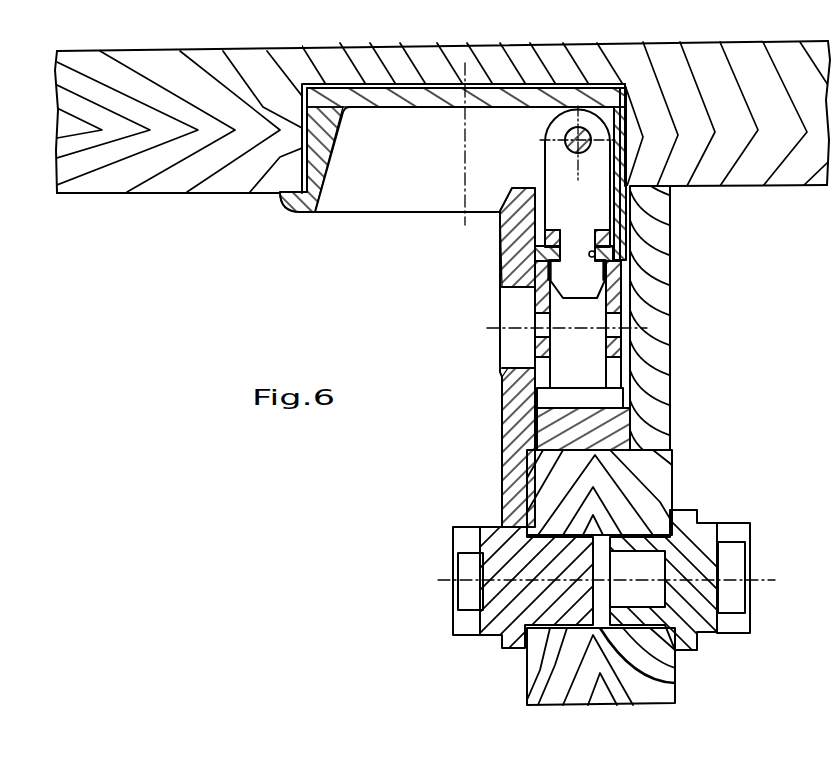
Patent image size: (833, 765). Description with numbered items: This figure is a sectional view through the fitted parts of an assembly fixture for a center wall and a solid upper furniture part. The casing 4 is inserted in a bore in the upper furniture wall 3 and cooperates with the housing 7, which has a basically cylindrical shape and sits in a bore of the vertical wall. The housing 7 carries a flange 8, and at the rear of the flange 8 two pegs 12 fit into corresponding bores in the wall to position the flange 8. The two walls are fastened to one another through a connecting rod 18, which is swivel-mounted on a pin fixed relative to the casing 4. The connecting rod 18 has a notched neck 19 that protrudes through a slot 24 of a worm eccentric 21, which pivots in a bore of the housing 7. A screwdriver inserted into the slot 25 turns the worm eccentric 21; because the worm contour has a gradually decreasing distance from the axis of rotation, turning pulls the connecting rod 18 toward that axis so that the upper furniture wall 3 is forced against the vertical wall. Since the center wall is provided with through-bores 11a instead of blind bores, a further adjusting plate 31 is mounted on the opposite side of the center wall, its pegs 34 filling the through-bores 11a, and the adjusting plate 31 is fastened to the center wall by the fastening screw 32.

The upper furniture wall 3 is at (744, 52).
The casing 4 is at (379, 100).
The housing 7 is at (623, 422).
The flange 8 is at (502, 462).
The through-bores 11a is at (660, 686).
The pegs 12 is at (517, 633).
The connecting rod 18 is at (600, 208).
The notched neck 19 is at (600, 234).
The worm eccentric 21 is at (622, 300).
The slot 24 is at (597, 259).
The slot 25 is at (533, 323).
The adjusting plate 31 is at (687, 510).
The fastening screw 32 is at (752, 597).
The pegs 34 is at (693, 649).